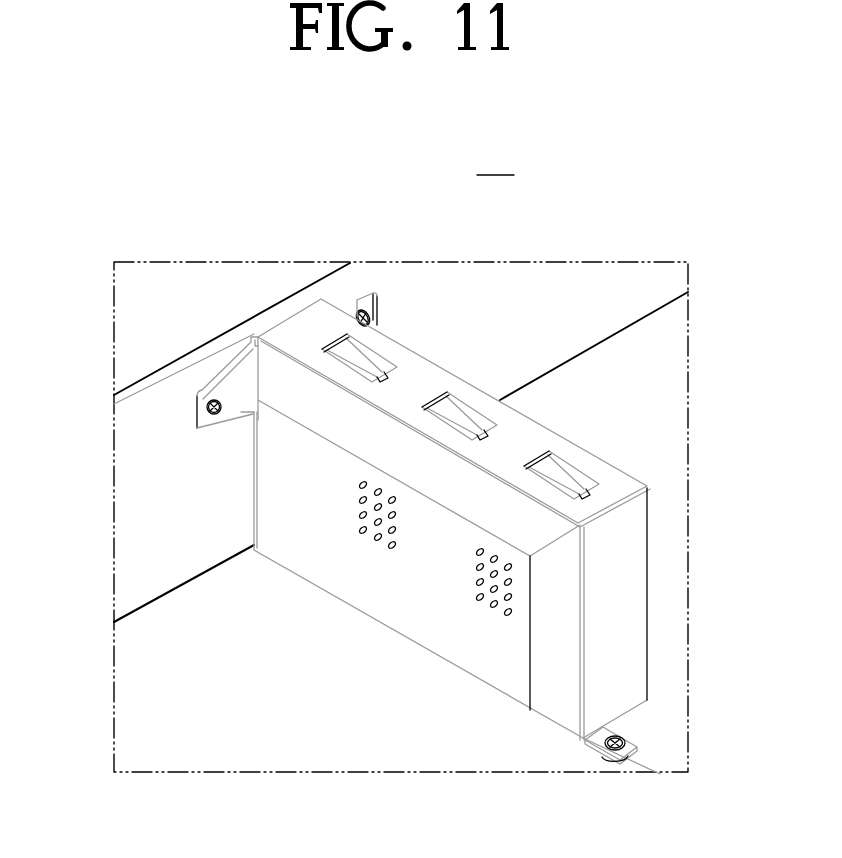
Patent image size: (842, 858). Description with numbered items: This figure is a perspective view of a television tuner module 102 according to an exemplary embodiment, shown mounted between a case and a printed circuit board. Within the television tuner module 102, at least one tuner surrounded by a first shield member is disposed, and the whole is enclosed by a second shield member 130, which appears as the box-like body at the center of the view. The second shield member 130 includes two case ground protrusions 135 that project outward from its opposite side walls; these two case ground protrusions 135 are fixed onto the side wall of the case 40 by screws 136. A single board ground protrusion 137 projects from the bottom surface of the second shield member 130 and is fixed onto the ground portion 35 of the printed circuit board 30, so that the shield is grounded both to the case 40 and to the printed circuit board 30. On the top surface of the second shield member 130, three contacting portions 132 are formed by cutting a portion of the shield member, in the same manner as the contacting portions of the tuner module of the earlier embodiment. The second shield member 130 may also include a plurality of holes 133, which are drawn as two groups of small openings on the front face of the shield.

The television tuner module 102 is at (496, 162).
The case 40 is at (417, 278).
The case ground protrusions 135 is at (214, 398).
The screws 136 is at (214, 418).
The contacting portions 132 is at (466, 425).
The second shield member 130 is at (500, 559).
The holes 133 is at (493, 605).
The printed circuit board 30 is at (672, 540).
The board ground protrusion 137 is at (640, 746).
The ground portion 35 is at (607, 752).